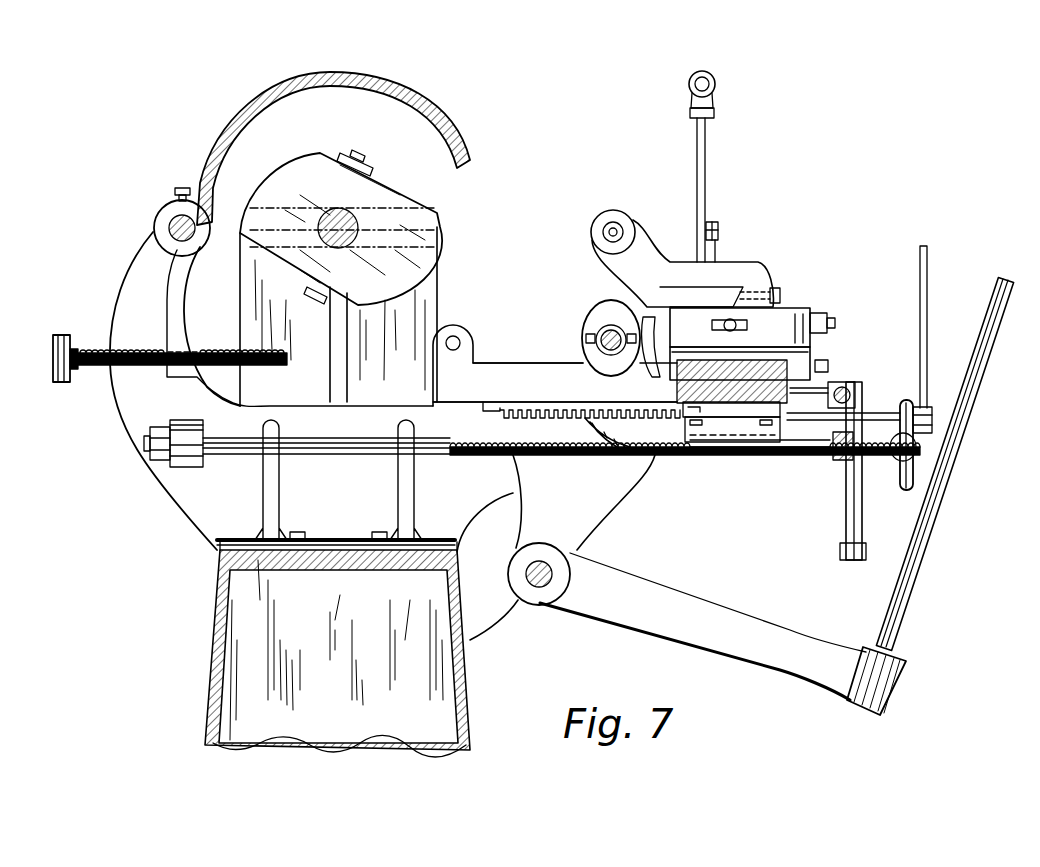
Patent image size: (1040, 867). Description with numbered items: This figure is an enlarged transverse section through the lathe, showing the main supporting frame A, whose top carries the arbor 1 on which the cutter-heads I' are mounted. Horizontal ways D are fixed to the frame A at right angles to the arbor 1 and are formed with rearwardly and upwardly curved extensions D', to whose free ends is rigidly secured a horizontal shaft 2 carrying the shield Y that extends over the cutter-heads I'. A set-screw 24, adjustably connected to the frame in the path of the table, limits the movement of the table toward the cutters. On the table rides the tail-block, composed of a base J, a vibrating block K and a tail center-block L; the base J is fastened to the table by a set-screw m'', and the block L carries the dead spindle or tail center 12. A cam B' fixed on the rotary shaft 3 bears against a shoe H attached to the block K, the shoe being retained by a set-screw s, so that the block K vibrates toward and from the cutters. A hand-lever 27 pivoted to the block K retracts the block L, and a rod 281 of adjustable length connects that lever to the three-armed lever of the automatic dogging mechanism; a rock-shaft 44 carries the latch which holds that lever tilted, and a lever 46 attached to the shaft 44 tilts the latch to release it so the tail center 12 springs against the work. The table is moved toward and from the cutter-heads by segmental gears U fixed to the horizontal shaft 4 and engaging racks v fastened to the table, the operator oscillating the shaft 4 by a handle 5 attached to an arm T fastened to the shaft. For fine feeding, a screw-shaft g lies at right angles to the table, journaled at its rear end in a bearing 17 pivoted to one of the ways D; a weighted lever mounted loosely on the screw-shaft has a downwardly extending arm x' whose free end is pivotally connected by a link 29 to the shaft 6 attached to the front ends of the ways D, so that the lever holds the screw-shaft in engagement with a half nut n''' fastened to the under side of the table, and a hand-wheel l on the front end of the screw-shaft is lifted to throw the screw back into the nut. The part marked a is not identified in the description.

The shield Y is at (298, 84).
The horizontal shaft 2 is at (173, 221).
The curved extensions D' is at (393, 391).
The bed arm a is at (555, 382).
The main supporting frame A is at (360, 673).
The bearing 17 is at (199, 465).
The set-screw 24 is at (210, 354).
The cutter-heads I' is at (341, 277).
The arbor 1 is at (350, 240).
The cam B' is at (598, 332).
The rotary shaft 3 is at (600, 337).
The shoe H is at (656, 347).
The vibrating block K is at (812, 278).
The set-screw s is at (822, 315).
The tail center-block L is at (682, 263).
The dead spindle 12 is at (602, 232).
The hand-lever 27 is at (705, 190).
The rod 281 is at (719, 240).
The base J is at (806, 356).
The shaft 6 is at (848, 386).
The set-screw m'' is at (837, 371).
The half nut n''' is at (731, 423).
The racks v is at (626, 418).
The segmental gears U is at (556, 547).
The horizontal shaft 4 is at (538, 590).
The arm T is at (703, 626).
The handle 5 is at (928, 524).
The rock-shaft 44 is at (886, 412).
The lever 46 is at (921, 327).
The downwardly extending arm x' is at (836, 471).
The link 29 is at (862, 522).
The hand-wheel l is at (901, 490).
The ways D is at (669, 479).
The screw-shaft g is at (742, 450).